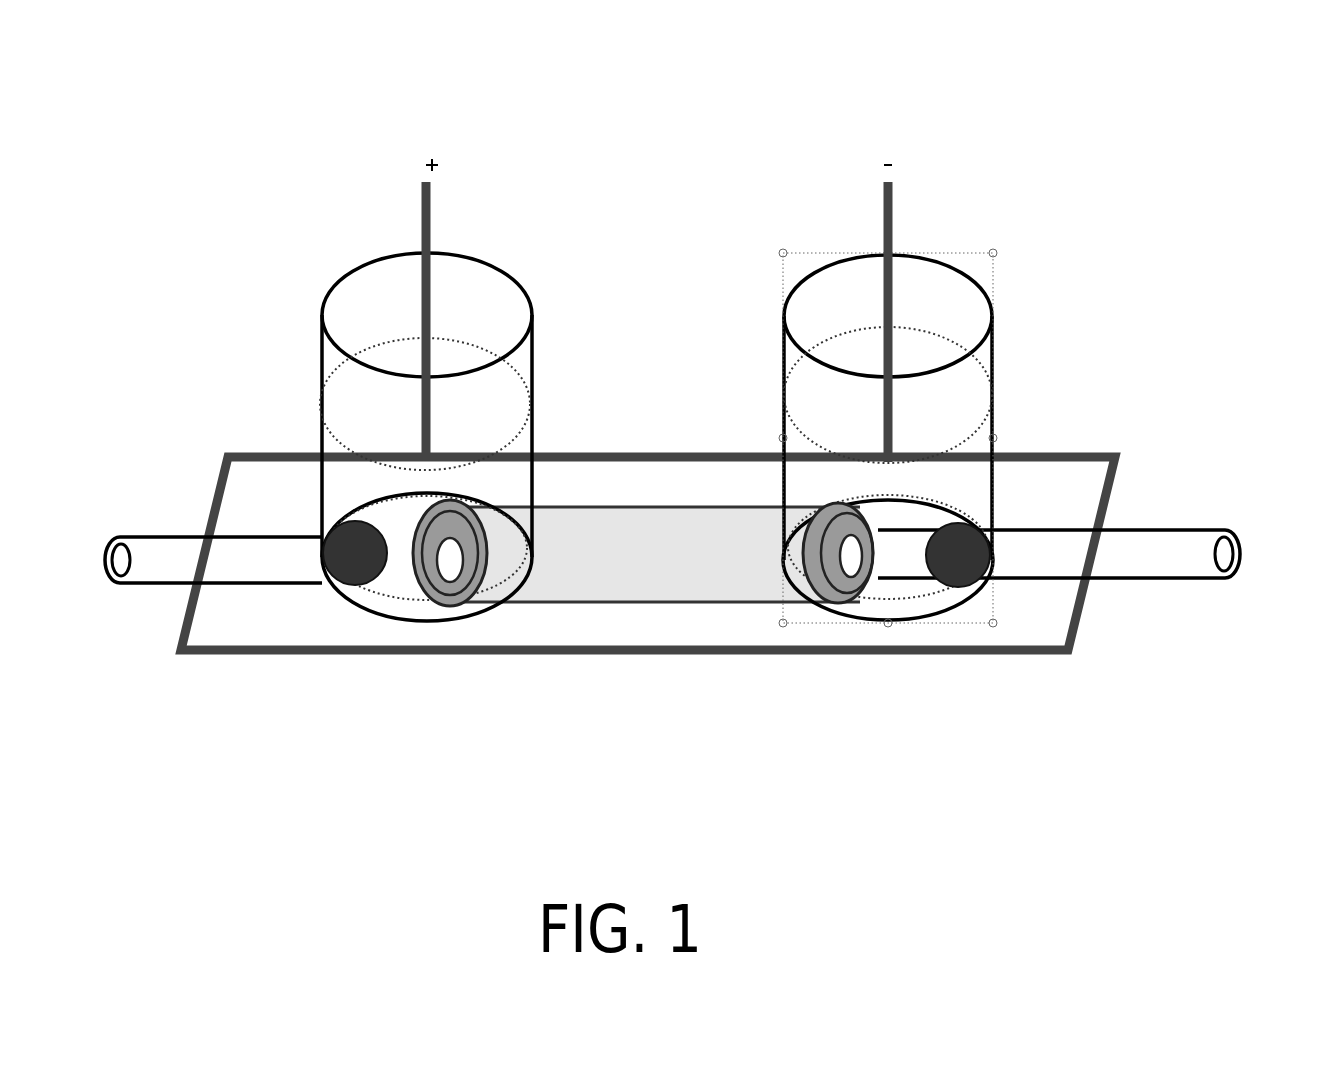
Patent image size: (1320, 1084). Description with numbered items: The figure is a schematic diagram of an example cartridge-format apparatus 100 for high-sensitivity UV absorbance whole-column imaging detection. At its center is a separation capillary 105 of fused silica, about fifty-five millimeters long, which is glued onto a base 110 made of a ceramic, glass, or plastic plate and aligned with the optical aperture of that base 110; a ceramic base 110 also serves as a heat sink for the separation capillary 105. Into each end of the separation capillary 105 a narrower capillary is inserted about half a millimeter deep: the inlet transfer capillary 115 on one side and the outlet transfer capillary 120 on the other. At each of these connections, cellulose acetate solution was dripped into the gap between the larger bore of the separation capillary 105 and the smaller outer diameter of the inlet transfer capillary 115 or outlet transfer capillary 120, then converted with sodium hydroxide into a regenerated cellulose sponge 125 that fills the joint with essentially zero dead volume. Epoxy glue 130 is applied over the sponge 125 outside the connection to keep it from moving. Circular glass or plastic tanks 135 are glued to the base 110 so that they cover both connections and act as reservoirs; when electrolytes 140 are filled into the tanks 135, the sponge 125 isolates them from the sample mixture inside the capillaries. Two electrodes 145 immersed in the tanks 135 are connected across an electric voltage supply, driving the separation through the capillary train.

The capillary electrophoresis cartridge 100 is at (1162, 158).
The separation capillary 105 is at (645, 580).
The base 110 is at (500, 663).
The inlet transfer capillary 115 is at (207, 693).
The outlet transfer capillary 120 is at (1146, 585).
The regenerated cellulose sponge 125 is at (163, 562).
The epoxy glue 130 is at (338, 528).
The tanks 135 is at (337, 268).
The electrolytes 140 is at (490, 473).
The electrodes 145 is at (652, 254).